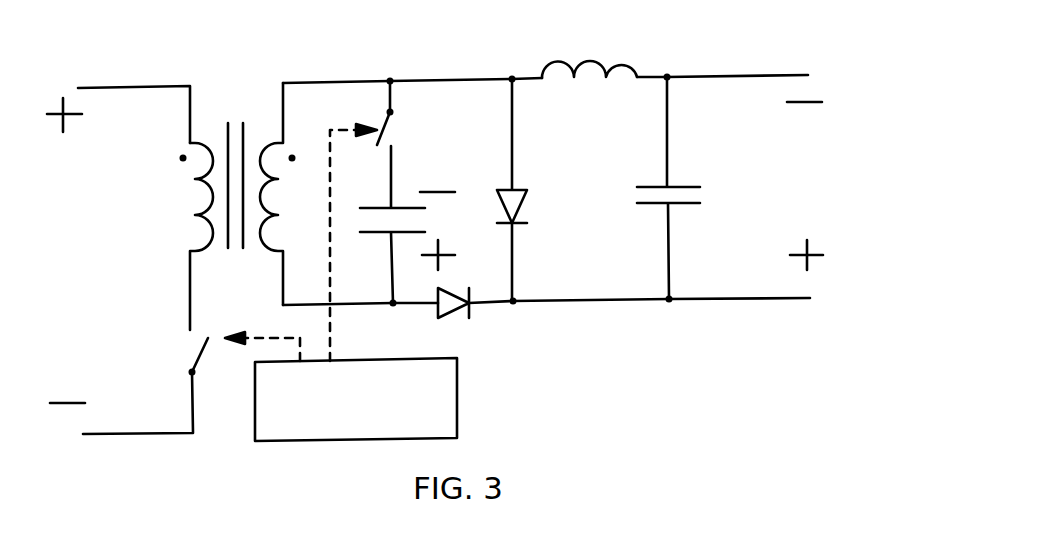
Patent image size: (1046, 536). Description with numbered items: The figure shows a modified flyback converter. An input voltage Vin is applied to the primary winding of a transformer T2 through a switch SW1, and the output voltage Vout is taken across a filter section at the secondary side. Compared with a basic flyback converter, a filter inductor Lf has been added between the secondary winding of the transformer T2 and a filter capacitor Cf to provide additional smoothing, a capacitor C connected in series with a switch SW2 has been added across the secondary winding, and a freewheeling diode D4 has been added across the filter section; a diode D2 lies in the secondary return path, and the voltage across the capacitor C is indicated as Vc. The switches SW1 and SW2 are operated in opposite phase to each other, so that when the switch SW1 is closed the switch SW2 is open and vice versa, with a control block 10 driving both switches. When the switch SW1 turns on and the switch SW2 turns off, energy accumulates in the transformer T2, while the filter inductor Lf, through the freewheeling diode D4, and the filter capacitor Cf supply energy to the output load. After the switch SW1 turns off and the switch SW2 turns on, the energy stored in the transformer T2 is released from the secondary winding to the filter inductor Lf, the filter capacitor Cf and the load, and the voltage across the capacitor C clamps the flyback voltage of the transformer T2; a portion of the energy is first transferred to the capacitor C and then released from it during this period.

The control circuit 10 is at (458, 398).
The transformer T2 is at (230, 176).
The switch SW1 is at (169, 344).
The switch SW2 is at (421, 113).
The capacitor C is at (392, 224).
The capacitor voltage Vc is at (446, 231).
The diode D2 is at (480, 312).
The freewheeling diode D4 is at (535, 190).
The filter inductor Lf is at (589, 47).
The filter capacitor Cf is at (688, 188).
The input voltage Vin is at (115, 260).
The output voltage Vout is at (807, 186).